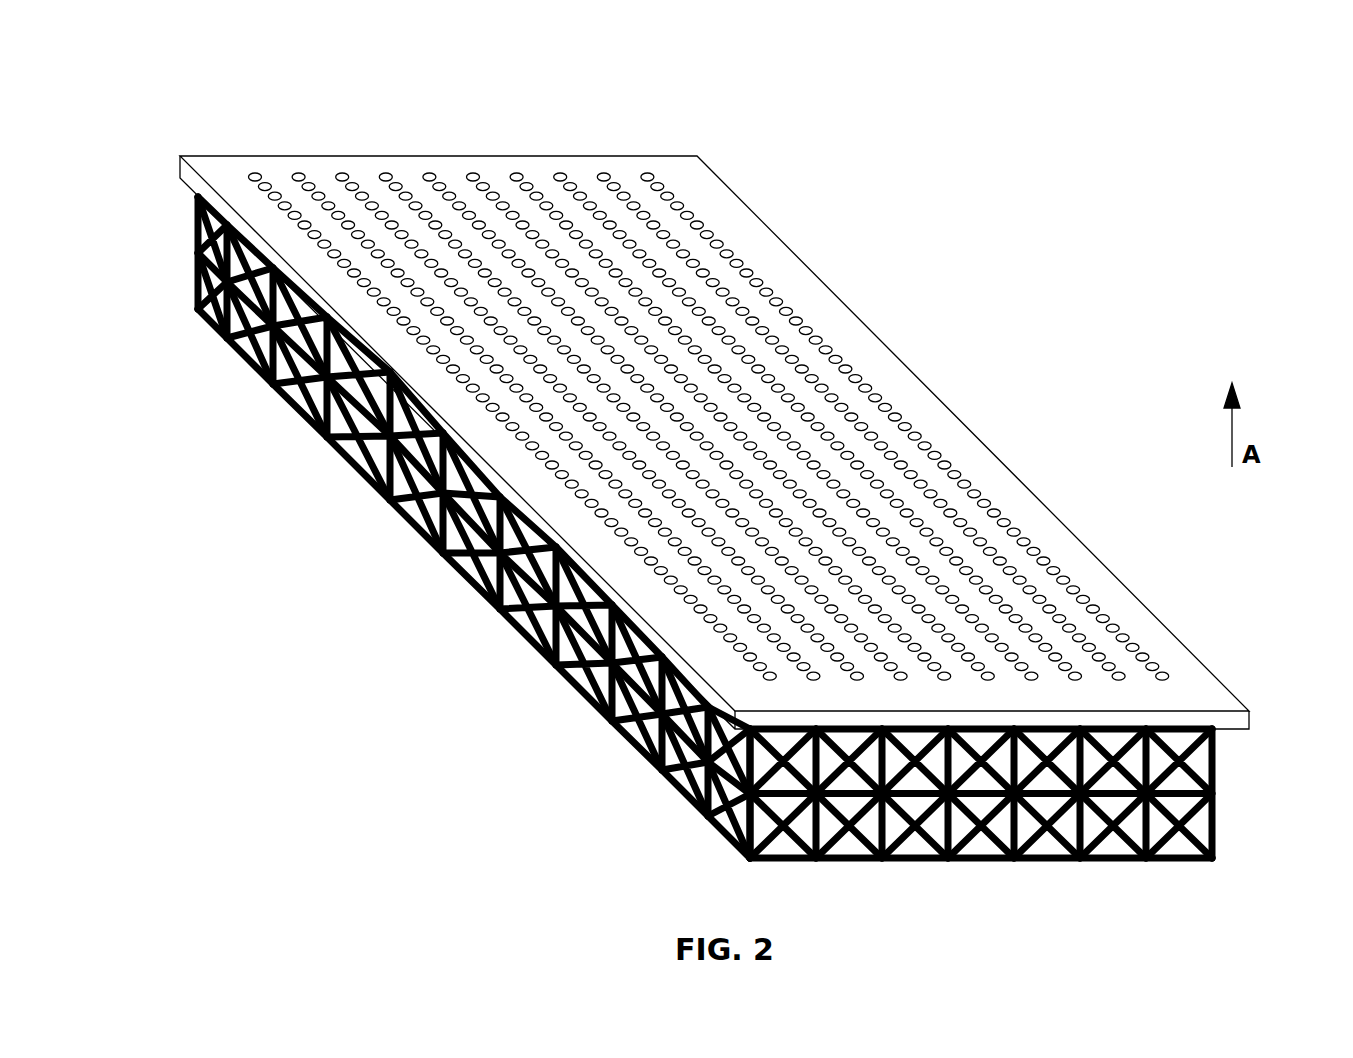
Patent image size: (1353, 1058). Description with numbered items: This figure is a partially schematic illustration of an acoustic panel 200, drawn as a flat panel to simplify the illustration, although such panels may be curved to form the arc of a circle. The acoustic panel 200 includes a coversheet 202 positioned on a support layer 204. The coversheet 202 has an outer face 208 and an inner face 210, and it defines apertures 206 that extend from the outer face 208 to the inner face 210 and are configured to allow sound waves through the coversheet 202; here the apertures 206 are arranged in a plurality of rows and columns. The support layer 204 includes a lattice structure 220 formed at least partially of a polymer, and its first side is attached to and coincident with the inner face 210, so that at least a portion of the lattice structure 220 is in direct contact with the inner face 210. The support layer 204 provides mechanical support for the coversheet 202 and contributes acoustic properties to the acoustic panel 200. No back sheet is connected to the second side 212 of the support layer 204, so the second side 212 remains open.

The acoustic panel 200 is at (166, 86).
The coversheet 202 is at (748, 206).
The support layer 204 is at (1217, 736).
The apertures 206 is at (947, 460).
The outer face 208 is at (1200, 690).
The inner face 210 is at (1217, 733).
The second side 212 is at (995, 870).
The lattice structure 220 is at (198, 243).